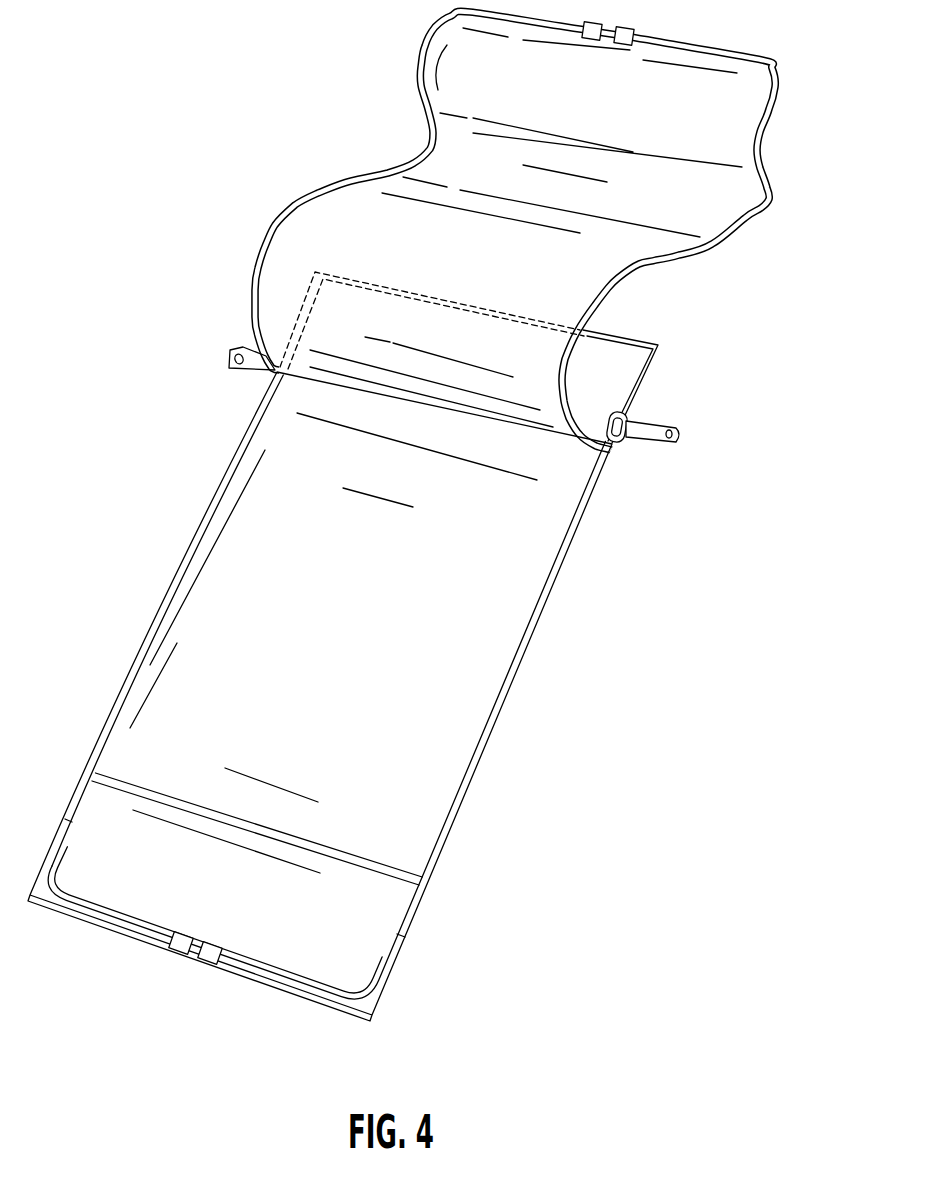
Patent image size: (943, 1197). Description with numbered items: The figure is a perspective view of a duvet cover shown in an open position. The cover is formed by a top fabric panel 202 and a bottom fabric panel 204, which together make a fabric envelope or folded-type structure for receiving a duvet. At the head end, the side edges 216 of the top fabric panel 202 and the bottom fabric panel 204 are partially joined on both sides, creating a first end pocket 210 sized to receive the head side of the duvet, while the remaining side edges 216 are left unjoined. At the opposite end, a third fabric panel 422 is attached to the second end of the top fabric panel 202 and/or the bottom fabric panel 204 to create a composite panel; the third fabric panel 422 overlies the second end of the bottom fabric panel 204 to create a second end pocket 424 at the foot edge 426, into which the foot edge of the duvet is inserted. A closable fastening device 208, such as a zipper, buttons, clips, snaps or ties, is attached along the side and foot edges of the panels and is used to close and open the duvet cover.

The top fabric panel 202 is at (650, 213).
The bottom fabric panel 204 is at (515, 590).
The closable fastening device 208 is at (232, 352).
The first end pocket 210 is at (600, 363).
The side edges 216 is at (185, 573).
The third fabric panel 422 is at (375, 965).
The second end pocket 424 is at (265, 910).
The foot edge 426 is at (138, 927).